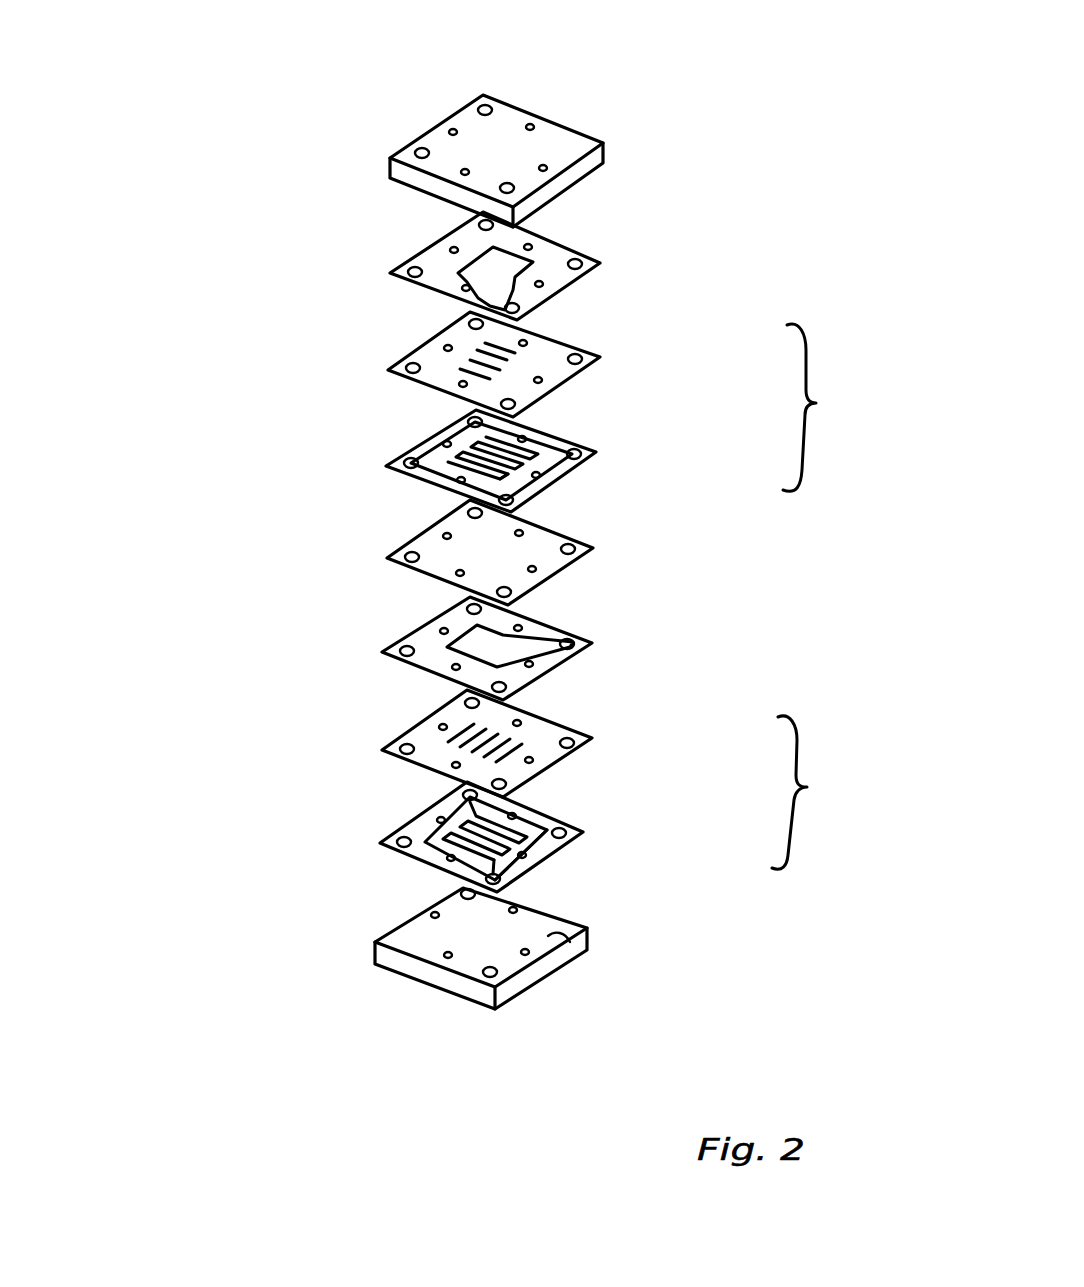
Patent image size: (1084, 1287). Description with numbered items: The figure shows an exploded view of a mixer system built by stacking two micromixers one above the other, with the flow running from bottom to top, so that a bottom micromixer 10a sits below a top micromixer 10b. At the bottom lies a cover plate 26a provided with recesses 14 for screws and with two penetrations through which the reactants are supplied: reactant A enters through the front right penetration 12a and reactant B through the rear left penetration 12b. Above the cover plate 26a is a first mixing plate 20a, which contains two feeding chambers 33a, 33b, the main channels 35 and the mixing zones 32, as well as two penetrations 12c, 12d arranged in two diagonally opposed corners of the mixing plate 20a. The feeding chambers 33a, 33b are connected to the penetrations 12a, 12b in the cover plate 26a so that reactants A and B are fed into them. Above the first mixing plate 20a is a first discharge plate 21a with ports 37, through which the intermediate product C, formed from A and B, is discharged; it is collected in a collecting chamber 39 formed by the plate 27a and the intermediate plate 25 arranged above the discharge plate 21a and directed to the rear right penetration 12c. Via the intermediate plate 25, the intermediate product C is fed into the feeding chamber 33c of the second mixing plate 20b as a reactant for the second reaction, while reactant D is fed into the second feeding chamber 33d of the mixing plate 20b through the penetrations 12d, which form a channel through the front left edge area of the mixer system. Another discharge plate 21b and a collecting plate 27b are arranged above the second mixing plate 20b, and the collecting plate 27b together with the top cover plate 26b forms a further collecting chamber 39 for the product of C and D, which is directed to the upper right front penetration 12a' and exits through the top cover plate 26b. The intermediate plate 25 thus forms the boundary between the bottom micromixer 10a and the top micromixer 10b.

The bottom micromixer 10a is at (830, 792).
The top micromixer 10b is at (841, 407).
The penetration 12a is at (597, 1000).
The penetration 12a' is at (622, 347).
The penetration 12b is at (485, 107).
The penetration 12c is at (568, 548).
The penetration 12d is at (418, 152).
The recess 14 is at (468, 171).
The first mixing plate 20a is at (542, 822).
The second mixing plate 20b is at (552, 440).
The first discharge plate 21a is at (540, 728).
The discharge plate 21b is at (553, 355).
The intermediate plate 25 is at (540, 550).
The cover plate 26a is at (586, 930).
The top cover plate 26b is at (562, 142).
The plate 27a is at (552, 637).
The collecting plate 27b is at (548, 262).
The mixing zone 32 is at (500, 884).
The feeding chamber 33a is at (440, 868).
The feeding chamber 33b is at (542, 866).
The feeding chamber 33c is at (553, 468).
The second feeding chamber 33d is at (450, 440).
The main channel 35 is at (445, 806).
The port 37 is at (450, 347).
The collecting chamber 39 is at (547, 308).